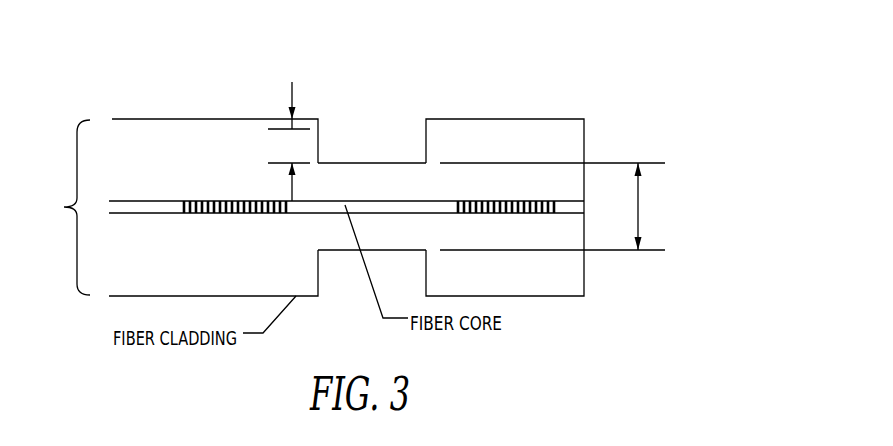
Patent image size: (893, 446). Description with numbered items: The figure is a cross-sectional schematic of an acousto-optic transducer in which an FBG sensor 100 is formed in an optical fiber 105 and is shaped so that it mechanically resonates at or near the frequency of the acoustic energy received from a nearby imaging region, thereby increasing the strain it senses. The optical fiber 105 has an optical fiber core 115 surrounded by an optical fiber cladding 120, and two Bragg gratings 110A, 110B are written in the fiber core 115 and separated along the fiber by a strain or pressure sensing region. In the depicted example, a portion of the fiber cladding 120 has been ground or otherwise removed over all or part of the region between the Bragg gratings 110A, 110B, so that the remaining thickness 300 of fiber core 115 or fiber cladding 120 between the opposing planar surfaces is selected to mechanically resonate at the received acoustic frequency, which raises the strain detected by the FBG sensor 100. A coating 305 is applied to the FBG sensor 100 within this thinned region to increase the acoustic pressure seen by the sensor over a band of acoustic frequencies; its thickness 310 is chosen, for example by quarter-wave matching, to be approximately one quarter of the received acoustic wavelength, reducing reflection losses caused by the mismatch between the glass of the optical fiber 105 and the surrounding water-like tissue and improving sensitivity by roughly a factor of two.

The FBG sensor 100 is at (512, 61).
The optical fiber 105 is at (58, 207).
The Bragg grating 110A is at (200, 200).
The Bragg grating 110B is at (508, 213).
The optical fiber core 115 is at (582, 207).
The optical fiber cladding 120 is at (585, 133).
The thickness 300 is at (641, 207).
The coating 305 is at (374, 129).
The thickness 310 is at (291, 92).